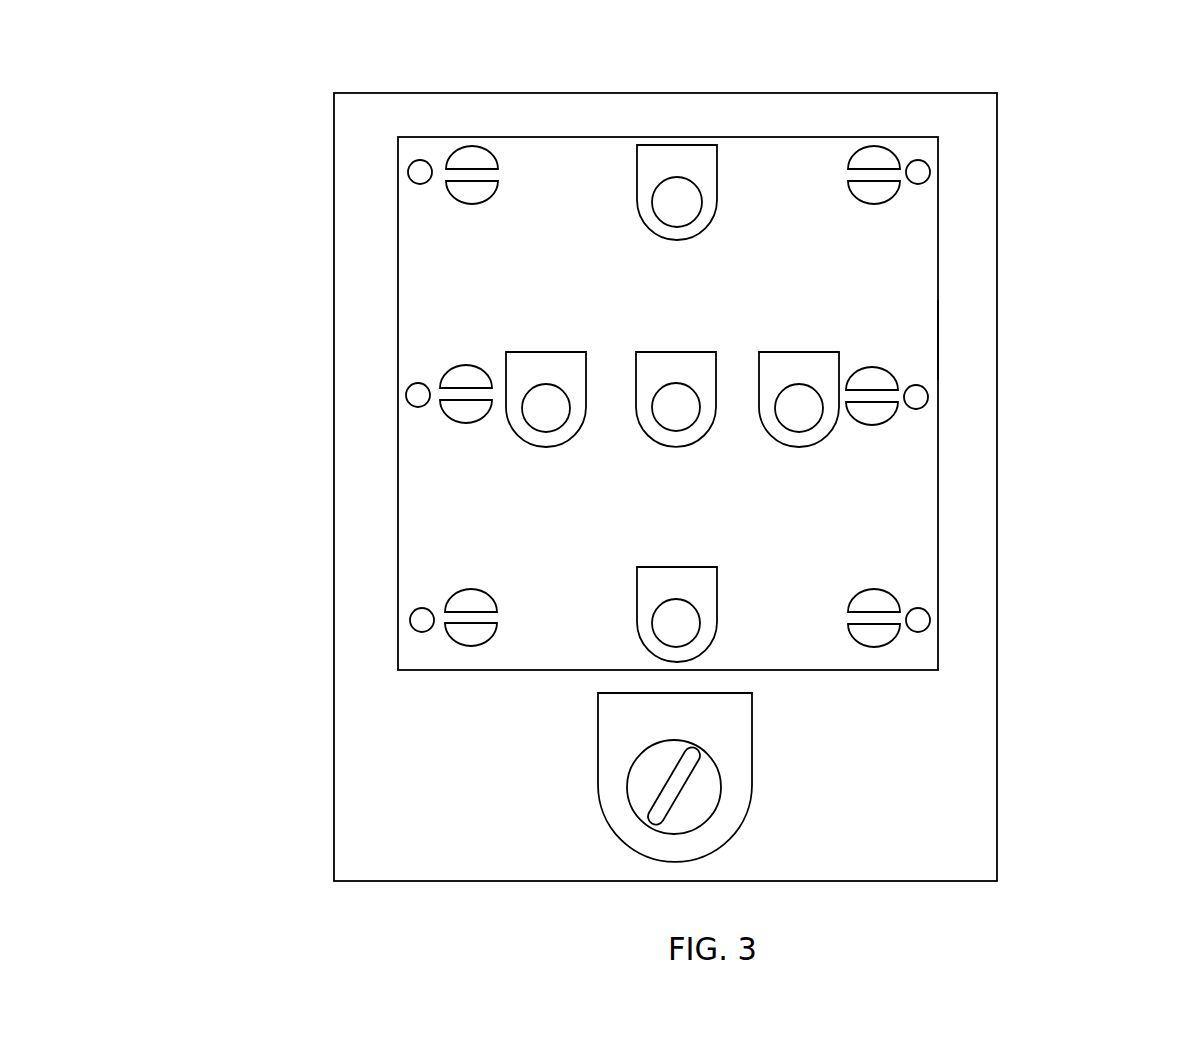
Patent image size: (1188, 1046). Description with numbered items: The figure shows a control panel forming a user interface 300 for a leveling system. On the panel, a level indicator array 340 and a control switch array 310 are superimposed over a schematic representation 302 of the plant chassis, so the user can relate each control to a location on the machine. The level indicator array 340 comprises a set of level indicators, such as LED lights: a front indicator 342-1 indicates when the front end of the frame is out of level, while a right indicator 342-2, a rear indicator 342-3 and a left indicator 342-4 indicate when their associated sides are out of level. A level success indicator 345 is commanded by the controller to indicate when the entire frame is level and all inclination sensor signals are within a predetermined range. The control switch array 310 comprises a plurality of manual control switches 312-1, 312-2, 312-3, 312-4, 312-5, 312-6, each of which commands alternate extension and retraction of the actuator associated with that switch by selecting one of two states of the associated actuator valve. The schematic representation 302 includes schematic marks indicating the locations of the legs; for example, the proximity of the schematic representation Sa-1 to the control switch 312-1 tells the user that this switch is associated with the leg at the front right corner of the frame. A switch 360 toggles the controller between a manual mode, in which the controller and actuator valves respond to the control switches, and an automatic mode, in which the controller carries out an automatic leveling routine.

The user interface 300 is at (155, 128).
The control switch array 310 is at (955, 150).
The level indicator array 340 is at (784, 160).
The schematic representation 302 is at (938, 337).
The schematic representation Sa-1 is at (918, 185).
The control switch 312-1 is at (909, 218).
The control switch 312-2 is at (907, 432).
The control switch 312-3 is at (917, 591).
The control switch 312-4 is at (427, 587).
The control switch 312-5 is at (438, 427).
The control switch 312-6 is at (436, 213).
The front indicator 342-1 is at (652, 203).
The right indicator 342-2 is at (776, 412).
The rear indicator 342-3 is at (652, 623).
The left indicator 342-4 is at (523, 412).
The level success indicator 345 is at (676, 432).
The switch 360 is at (627, 787).